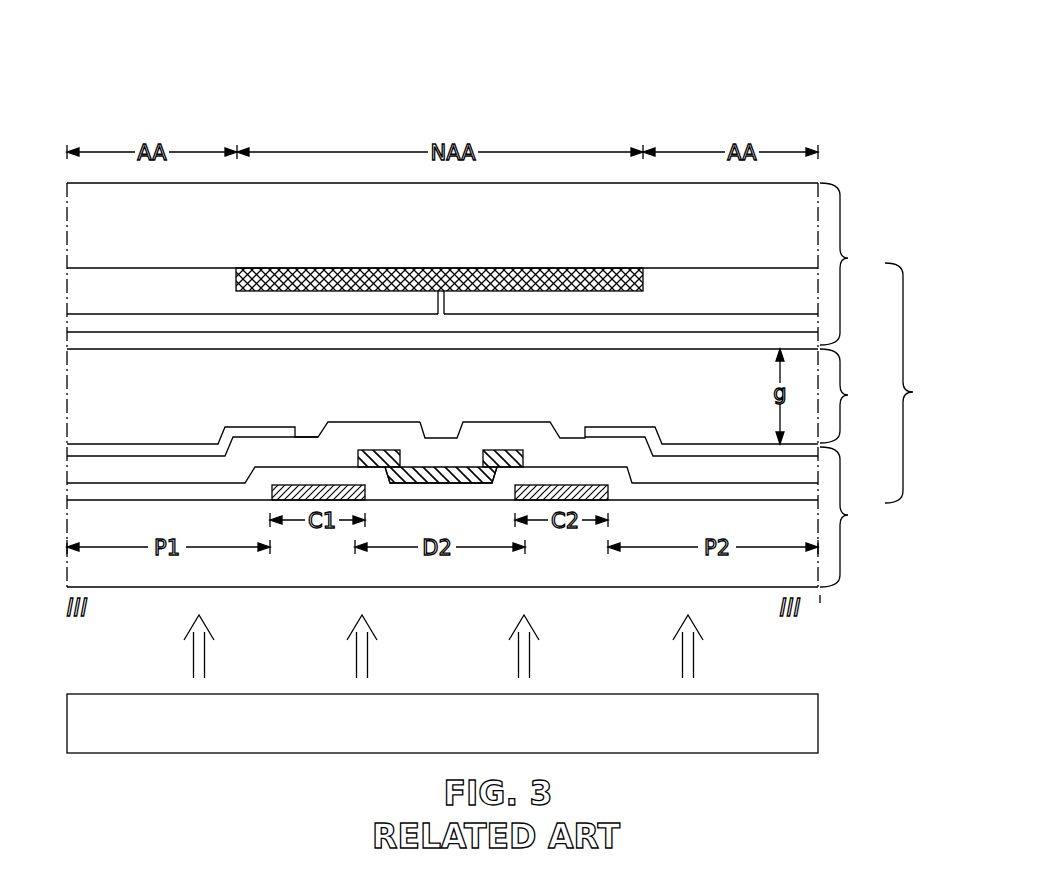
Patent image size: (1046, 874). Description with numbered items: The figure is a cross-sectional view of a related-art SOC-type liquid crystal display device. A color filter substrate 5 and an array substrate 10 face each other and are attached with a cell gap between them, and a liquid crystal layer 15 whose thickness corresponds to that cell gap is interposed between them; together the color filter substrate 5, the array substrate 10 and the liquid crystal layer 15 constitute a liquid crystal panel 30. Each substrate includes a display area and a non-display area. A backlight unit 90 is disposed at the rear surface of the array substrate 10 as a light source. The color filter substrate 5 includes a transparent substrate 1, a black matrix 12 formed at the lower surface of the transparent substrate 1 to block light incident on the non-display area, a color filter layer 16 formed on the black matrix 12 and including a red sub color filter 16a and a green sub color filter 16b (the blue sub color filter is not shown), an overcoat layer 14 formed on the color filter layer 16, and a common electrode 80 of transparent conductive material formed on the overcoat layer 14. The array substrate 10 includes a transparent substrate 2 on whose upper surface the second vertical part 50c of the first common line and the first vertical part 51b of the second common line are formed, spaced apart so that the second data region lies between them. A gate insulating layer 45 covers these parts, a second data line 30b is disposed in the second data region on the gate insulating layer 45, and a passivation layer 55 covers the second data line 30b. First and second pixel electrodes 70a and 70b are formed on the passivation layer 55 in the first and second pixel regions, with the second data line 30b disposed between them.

The transparent substrate 1 is at (790, 214).
The transparent substrate 2 is at (788, 578).
The color filter substrate 5 is at (850, 258).
The array substrate 10 is at (850, 515).
The black matrix 12 is at (290, 292).
The overcoat layer 14 is at (606, 325).
The liquid crystal layer 15 is at (850, 395).
The color filter layer 16 is at (422, 54).
The red sub color filter 16a is at (192, 295).
The green sub color filter 16b is at (693, 293).
The liquid crystal panel 30 is at (915, 392).
The second data line 30b is at (440, 478).
The gate insulating layer 45 is at (683, 492).
The second vertical part of the first common line 50c is at (307, 488).
The first vertical part of the second common line 51b is at (549, 492).
The passivation layer 55 is at (489, 433).
The first pixel electrode 70a is at (142, 448).
The second pixel electrode 70b is at (712, 448).
The common electrode 80 is at (371, 349).
The backlight unit 90 is at (798, 722).